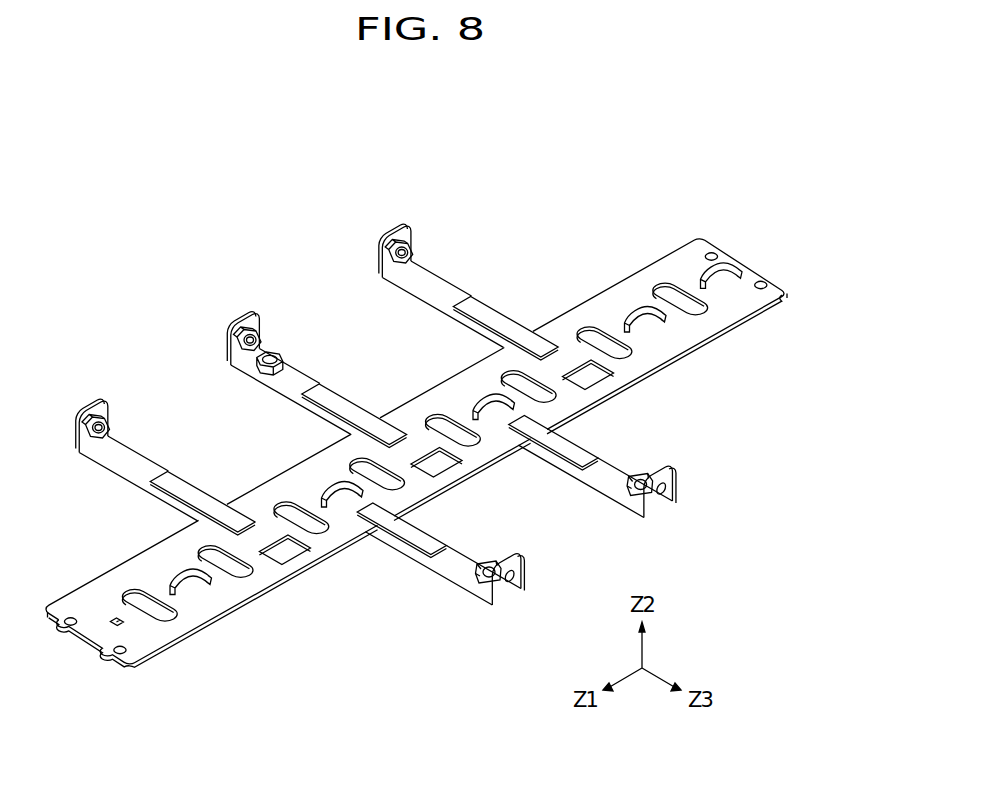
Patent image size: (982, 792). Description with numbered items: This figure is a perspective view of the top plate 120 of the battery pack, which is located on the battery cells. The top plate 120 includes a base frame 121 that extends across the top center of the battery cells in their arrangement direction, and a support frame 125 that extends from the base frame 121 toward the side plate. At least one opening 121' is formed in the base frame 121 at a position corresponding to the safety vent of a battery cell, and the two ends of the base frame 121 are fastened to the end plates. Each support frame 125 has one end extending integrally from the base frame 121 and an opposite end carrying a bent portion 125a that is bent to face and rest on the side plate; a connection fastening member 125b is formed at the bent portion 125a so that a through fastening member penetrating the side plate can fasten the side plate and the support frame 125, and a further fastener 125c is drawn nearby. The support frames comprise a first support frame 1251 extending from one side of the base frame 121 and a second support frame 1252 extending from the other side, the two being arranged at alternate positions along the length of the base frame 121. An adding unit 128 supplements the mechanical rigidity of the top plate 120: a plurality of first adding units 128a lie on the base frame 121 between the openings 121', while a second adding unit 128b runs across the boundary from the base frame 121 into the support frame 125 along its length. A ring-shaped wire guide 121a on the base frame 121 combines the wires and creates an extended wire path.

The top plate 120 is at (728, 183).
The base frame 121 is at (412, 423).
The opening 121' is at (414, 417).
The wire guide 121a is at (725, 265).
The support frame 125 is at (440, 285).
The bent portion 125a is at (405, 230).
The connection fastening member 125b is at (248, 318).
The nut 125c is at (282, 354).
The adding unit 128 is at (732, 400).
The first adding unit 128a is at (593, 372).
The second adding unit 128b is at (491, 320).
The first support frame 1251 is at (301, 392).
The second support frame 1252 is at (443, 563).